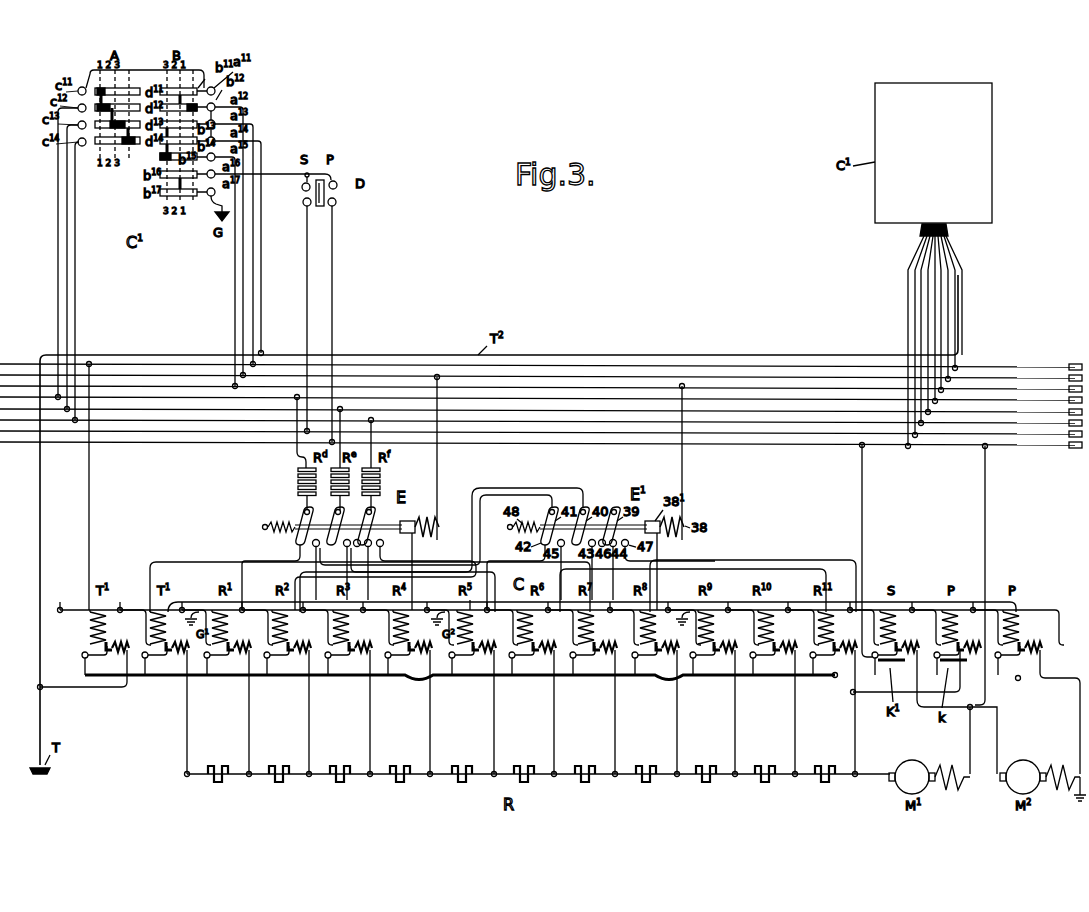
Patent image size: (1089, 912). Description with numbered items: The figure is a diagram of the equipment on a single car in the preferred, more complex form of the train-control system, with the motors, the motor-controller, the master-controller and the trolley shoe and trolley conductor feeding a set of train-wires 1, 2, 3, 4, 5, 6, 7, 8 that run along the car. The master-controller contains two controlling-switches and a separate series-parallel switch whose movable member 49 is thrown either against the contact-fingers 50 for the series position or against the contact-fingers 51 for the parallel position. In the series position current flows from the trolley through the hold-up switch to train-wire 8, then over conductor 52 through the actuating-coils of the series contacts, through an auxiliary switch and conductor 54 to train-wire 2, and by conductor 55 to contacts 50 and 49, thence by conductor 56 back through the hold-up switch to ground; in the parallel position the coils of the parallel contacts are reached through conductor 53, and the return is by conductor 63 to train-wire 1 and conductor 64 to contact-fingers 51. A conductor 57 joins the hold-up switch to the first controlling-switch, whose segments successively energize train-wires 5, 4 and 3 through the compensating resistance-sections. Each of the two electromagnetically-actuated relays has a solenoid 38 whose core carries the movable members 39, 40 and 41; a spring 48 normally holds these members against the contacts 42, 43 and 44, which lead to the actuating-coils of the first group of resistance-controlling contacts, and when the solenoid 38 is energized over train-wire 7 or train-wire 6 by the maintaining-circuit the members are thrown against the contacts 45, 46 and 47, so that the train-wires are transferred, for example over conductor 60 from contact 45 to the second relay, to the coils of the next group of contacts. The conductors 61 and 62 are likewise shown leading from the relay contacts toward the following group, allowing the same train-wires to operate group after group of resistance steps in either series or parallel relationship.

The train-wire 1 is at (527, 444).
The train-wire 2 is at (547, 433).
The train-wire 3 is at (564, 422).
The train-wire 4 is at (582, 411).
The train-wire 5 is at (602, 399).
The train-wire 6 is at (619, 388).
The train-wire 7 is at (637, 377).
The train-wire 8 is at (655, 366).
The solenoid 38 is at (410, 521).
The movable member 39 is at (372, 521).
The movable member 40 is at (341, 521).
The movable member 41 is at (310, 521).
The contact 42 is at (296, 543).
The contact 43 is at (342, 570).
The contact 44 is at (374, 570).
The contact 45 is at (309, 570).
The contact 46 is at (358, 551).
The contact 47 is at (384, 545).
The spring 48 is at (278, 524).
The movable member of series-parallel switch 49 is at (326, 183).
The contact-fingers 50 is at (303, 202).
The contact-fingers 51 is at (336, 202).
The conductor 52 is at (90, 556).
The conductor 53 is at (183, 594).
The conductor 54 is at (989, 543).
The conductor 55 is at (305, 270).
The conductor 56 is at (275, 172).
The conductor 57 is at (145, 70).
The conductor 60 is at (448, 570).
The conductor 61 is at (428, 566).
The conductor 62 is at (453, 566).
The conductor 63 is at (865, 560).
The conductor 64 is at (336, 330).